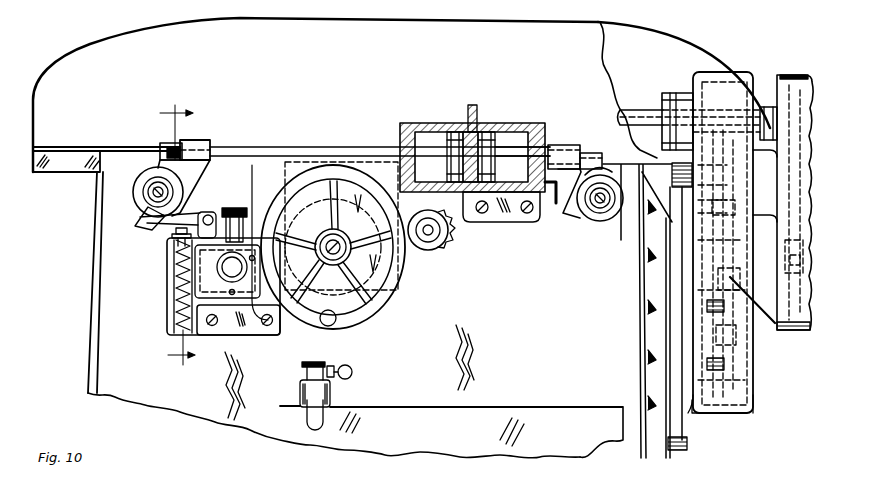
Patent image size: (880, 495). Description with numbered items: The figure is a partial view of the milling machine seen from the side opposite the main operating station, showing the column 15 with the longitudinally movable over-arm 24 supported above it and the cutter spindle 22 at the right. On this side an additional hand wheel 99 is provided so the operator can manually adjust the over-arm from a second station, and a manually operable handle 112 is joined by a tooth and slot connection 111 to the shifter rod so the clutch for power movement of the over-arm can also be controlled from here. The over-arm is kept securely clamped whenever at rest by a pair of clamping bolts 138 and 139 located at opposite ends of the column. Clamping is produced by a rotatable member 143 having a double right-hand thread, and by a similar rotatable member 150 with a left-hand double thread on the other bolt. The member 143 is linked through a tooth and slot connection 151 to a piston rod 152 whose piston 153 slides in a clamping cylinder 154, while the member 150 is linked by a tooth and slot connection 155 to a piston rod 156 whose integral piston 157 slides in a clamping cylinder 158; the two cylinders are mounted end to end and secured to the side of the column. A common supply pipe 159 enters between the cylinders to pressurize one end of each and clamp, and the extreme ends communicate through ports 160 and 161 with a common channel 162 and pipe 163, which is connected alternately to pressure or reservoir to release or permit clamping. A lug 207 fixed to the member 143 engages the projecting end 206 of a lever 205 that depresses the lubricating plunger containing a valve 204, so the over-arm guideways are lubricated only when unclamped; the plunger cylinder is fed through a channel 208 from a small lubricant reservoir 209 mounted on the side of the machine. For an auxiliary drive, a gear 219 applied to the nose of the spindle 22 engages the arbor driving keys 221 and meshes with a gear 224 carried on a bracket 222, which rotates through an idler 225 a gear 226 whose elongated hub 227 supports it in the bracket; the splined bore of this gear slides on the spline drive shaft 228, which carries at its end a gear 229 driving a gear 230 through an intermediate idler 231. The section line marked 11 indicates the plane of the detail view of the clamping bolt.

The over-arm 24 is at (128, 41).
The column 15 is at (103, 340).
The section line 11 is at (190, 235).
The tooth and slot connection 151 is at (183, 141).
The piston rod 152 is at (331, 150).
The rotatable member 143 is at (168, 160).
The clamping bolt 138 is at (148, 183).
The lug 207 is at (150, 214).
The lever 205 is at (200, 208).
The projecting end 206 is at (172, 236).
The valve 204 is at (175, 273).
The channel 208 is at (220, 338).
The lubricant reservoir 209 is at (272, 331).
The hand wheel 99 is at (380, 302).
The clamping cylinder 154 is at (422, 125).
The piston 153 is at (455, 137).
The piston 157 is at (486, 133).
The supply pipe 159 is at (468, 112).
The clamping cylinder 158 is at (513, 127).
The piston rod 156 is at (517, 153).
The port 160 is at (405, 220).
The port 161 is at (513, 218).
The channel 162 is at (465, 214).
The pipe 163 is at (540, 218).
The tooth and slot connection 155 is at (580, 157).
The rotatable member 150 is at (583, 212).
The clamping bolt 139 is at (612, 178).
The cutter spindle 22 is at (688, 442).
The gear 219 is at (708, 402).
The spline drive shaft 228 is at (645, 117).
The elongated hub 227 is at (687, 100).
The gear 226 is at (713, 83).
The idler 225 is at (718, 208).
The gear 224 is at (720, 268).
The arbor driving keys 221 is at (732, 340).
The bracket 222 is at (732, 416).
The gear 229 is at (797, 87).
The idler 231 is at (790, 236).
The gear 230 is at (790, 270).
The handle 112 is at (300, 425).
The tooth and slot connection 111 is at (338, 382).